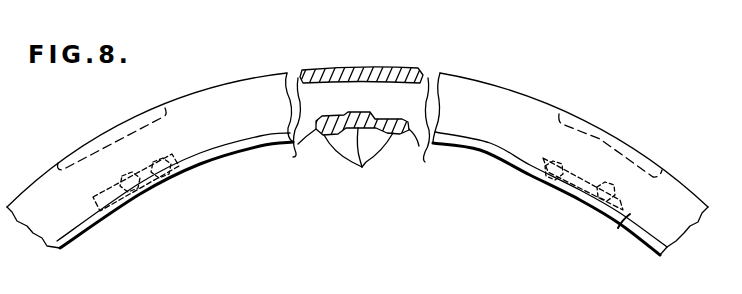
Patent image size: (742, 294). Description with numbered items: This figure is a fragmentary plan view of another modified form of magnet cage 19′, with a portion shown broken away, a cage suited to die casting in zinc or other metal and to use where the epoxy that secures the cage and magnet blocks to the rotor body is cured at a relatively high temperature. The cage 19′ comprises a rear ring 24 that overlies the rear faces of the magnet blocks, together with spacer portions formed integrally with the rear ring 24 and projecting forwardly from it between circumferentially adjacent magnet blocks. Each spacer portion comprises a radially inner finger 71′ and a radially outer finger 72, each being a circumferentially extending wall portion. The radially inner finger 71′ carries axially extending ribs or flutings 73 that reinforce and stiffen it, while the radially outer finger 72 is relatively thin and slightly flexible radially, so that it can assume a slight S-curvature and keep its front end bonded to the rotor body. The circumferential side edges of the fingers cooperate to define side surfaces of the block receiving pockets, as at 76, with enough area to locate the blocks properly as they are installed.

The rear ring 24 is at (243, 86).
The cage 19′ is at (628, 124).
The radially outer finger 72 is at (373, 68).
The radially inner finger 71′ is at (618, 228).
The side surfaces of the block receiving pockets 76 is at (293, 157).
The ribs or flutings 73 is at (361, 167).